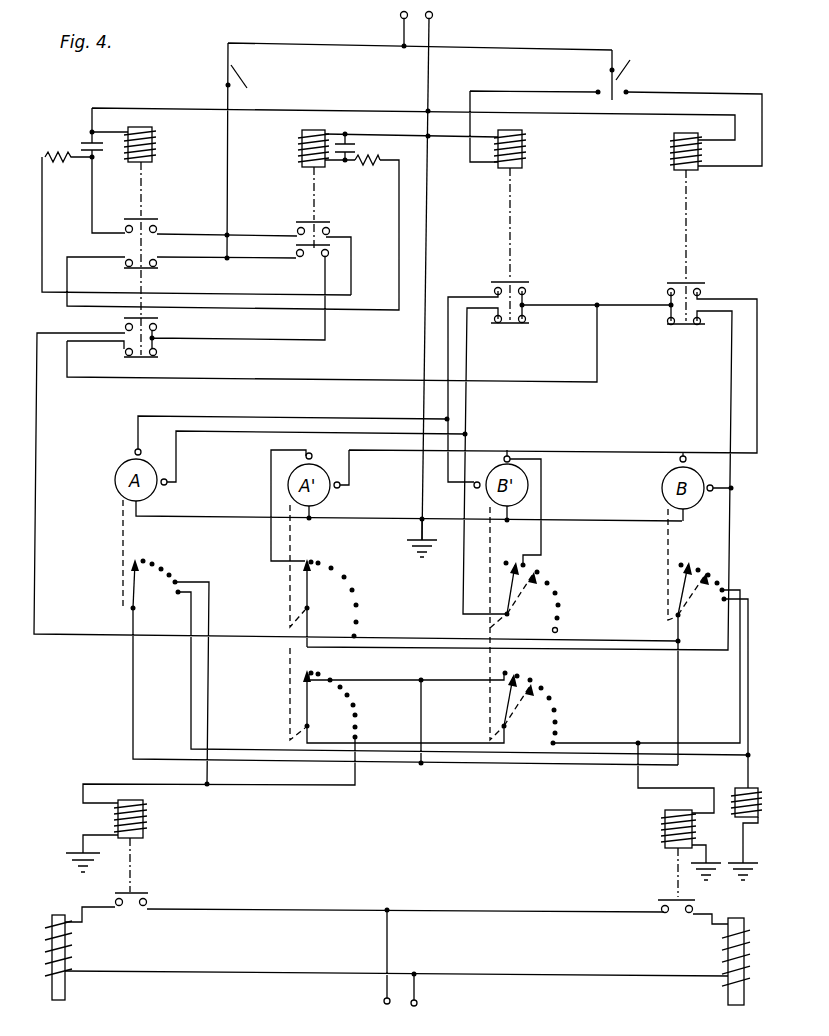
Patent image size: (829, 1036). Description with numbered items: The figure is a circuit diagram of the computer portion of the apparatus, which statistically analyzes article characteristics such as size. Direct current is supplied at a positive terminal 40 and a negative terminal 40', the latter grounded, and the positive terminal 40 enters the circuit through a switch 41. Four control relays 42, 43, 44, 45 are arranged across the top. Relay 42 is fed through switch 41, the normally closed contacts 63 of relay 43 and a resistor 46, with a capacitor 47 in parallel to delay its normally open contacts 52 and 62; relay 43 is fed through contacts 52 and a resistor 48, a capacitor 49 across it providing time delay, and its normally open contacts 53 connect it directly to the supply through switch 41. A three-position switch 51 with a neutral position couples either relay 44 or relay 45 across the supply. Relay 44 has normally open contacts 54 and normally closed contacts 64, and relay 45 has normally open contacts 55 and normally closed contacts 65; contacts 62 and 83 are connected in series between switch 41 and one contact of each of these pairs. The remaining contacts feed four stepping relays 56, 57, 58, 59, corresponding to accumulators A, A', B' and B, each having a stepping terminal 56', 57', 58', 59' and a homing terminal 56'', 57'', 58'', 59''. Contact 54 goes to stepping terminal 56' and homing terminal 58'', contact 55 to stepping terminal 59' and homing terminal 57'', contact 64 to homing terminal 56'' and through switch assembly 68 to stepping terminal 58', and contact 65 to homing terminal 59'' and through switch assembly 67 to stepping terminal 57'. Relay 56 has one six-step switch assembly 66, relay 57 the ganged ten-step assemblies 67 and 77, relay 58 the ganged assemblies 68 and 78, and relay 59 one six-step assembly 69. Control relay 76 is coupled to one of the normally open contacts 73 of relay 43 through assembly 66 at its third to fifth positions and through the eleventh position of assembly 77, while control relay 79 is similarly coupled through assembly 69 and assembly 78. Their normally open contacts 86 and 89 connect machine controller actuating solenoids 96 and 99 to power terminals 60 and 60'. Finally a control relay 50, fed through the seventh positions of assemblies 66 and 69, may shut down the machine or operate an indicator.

The positive terminal 40 is at (380, 30).
The negative terminal 40' is at (450, 276).
The switch 41 is at (226, 86).
The control relay 42 is at (300, 151).
The control relay 43 is at (155, 152).
The control relay 44 is at (524, 150).
The control relay 45 is at (673, 152).
The resistor 46 is at (372, 166).
The capacitor 47 is at (346, 141).
The resistor 48 is at (68, 173).
The capacitor 49 is at (88, 137).
The control relay 50 is at (757, 792).
The three-position switch 51 is at (625, 69).
The normally open contacts 52 is at (322, 221).
The normally open contacts 53 is at (144, 218).
The normally open contacts 54 is at (513, 281).
The normally open contacts 55 is at (688, 282).
The stepping relay 56 is at (113, 482).
The stepping terminal 56' is at (117, 440).
The homing terminal 56'' is at (162, 460).
The stepping relay 57 is at (282, 485).
The stepping terminal 57' is at (315, 429).
The homing terminal 57'' is at (360, 472).
The stepping relay 58 is at (532, 485).
The stepping terminal 58' is at (520, 445).
The homing terminal 58'' is at (454, 501).
The stepping relay 59 is at (665, 488).
The stepping terminal 59' is at (699, 443).
The homing terminal 59'' is at (717, 475).
The terminal 60 is at (364, 1001).
The terminal 60' is at (438, 1001).
The normally open contacts 62 is at (306, 259).
The normally closed contacts 63 is at (124, 270).
The normally closed contacts 64 is at (513, 325).
The normally closed contacts 65 is at (686, 327).
The switch assembly 66 is at (127, 606).
The switch assembly 67 is at (298, 612).
The switch assembly 68 is at (508, 580).
The switch assembly 69 is at (680, 589).
The normally open contacts 73 is at (124, 323).
The control relay 76 is at (144, 818).
The switch assembly 77 is at (304, 676).
The switch assembly 78 is at (509, 699).
The control relay 79 is at (664, 822).
The normally closed contacts 83 is at (124, 358).
The normally open contacts 86 is at (148, 868).
The normally open contacts 89 is at (661, 899).
The machine controller actuating solenoid 96 is at (51, 926).
The machine controller actuating solenoid 99 is at (746, 937).